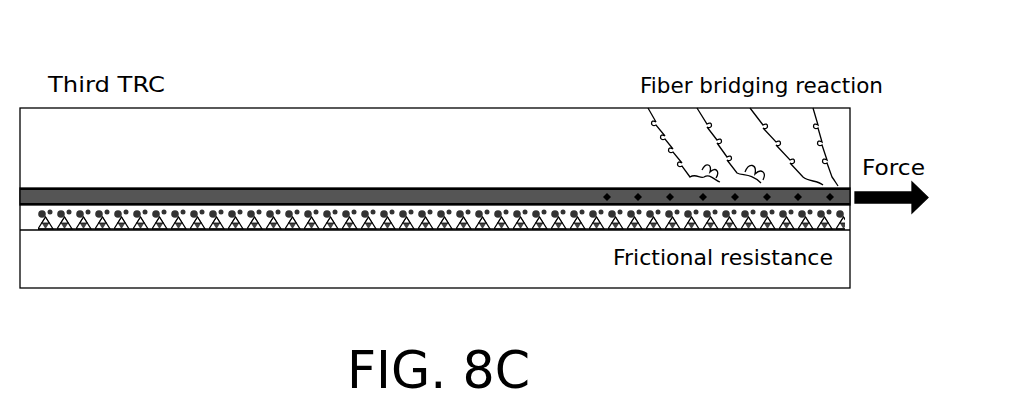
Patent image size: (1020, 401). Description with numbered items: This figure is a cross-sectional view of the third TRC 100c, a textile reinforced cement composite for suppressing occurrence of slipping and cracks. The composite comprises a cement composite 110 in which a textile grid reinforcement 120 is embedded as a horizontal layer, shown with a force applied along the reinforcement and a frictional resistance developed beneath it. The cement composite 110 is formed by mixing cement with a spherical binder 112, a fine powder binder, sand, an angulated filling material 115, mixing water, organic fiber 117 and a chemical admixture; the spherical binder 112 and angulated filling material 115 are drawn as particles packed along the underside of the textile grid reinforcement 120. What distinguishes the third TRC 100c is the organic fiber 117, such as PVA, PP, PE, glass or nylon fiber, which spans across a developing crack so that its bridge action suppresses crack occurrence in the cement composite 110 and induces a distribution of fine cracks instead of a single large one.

The cement composite 110 is at (268, 120).
The textile grid reinforcement 120 is at (430, 188).
The third TRC 100c is at (470, 88).
The organic fiber 117 is at (648, 108).
The angulated filling material 115 is at (137, 227).
The spherical binder 112 is at (212, 227).